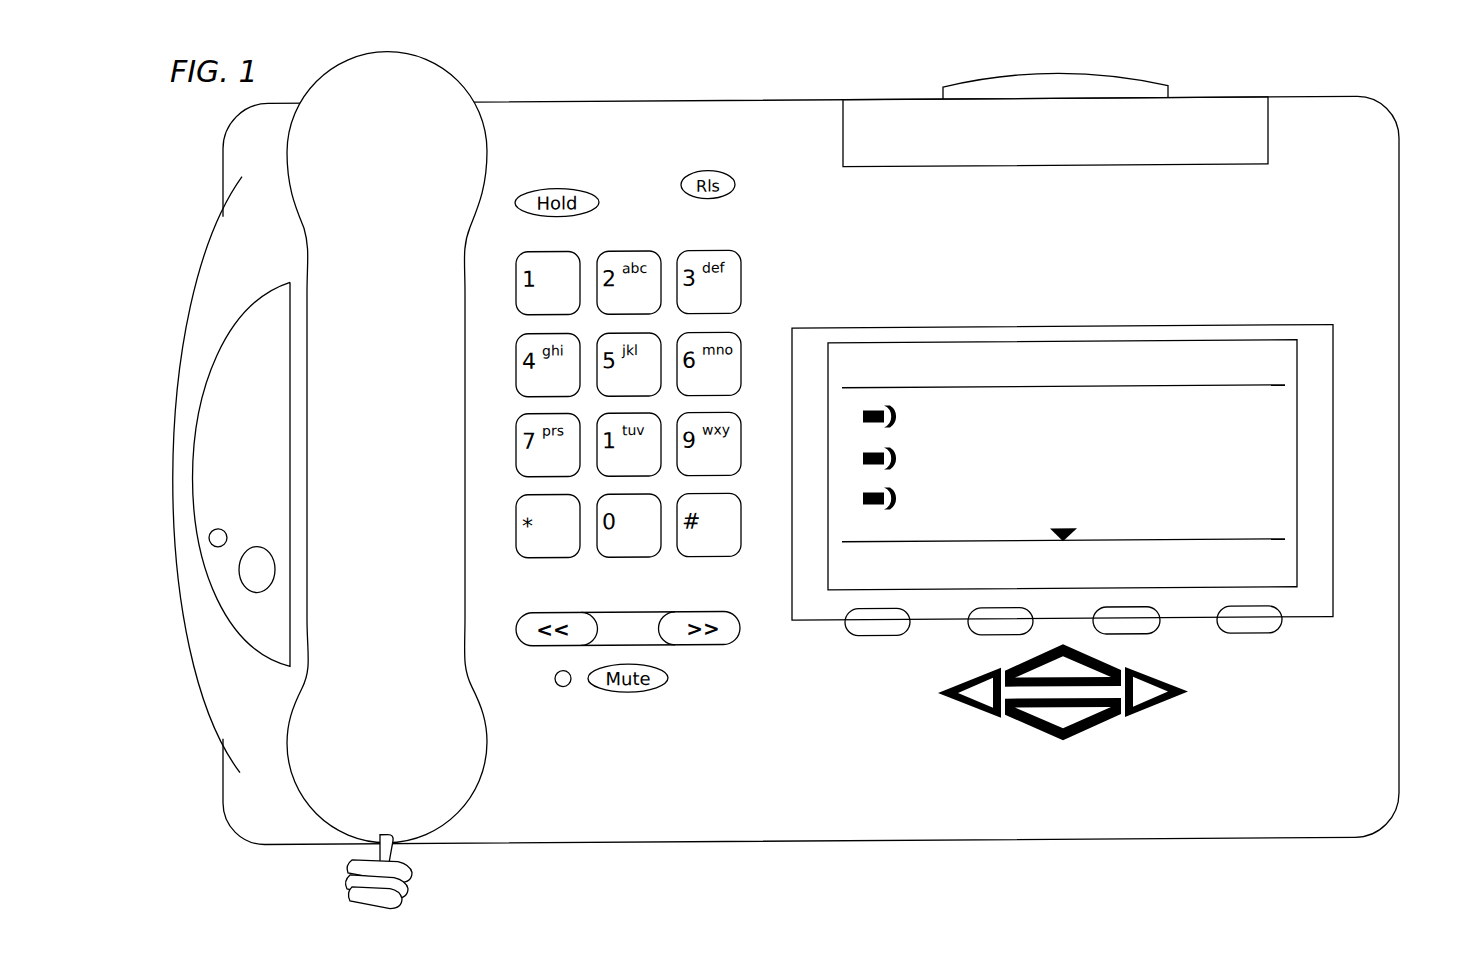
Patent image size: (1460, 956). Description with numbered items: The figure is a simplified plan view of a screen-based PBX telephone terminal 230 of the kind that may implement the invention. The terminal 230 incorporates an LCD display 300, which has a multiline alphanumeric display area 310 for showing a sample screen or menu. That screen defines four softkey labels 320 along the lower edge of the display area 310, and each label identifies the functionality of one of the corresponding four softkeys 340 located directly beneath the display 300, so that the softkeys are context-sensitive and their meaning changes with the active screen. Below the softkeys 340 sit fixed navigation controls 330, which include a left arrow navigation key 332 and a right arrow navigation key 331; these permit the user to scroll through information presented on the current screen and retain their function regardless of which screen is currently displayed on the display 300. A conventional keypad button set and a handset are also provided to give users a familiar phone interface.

The screen-based PBX telephone terminal 230 is at (1327, 846).
The LCD display 300 is at (1333, 353).
The multiline alphanumeric display area 310 is at (1088, 393).
The softkey labels 320 is at (995, 547).
The fixed navigation controls 330 is at (1058, 725).
The right arrow navigation key 331 is at (1149, 710).
The left arrow navigation key 332 is at (975, 710).
The softkeys 340 is at (975, 631).